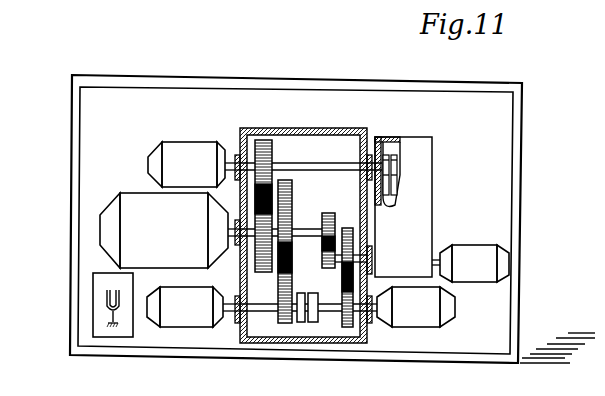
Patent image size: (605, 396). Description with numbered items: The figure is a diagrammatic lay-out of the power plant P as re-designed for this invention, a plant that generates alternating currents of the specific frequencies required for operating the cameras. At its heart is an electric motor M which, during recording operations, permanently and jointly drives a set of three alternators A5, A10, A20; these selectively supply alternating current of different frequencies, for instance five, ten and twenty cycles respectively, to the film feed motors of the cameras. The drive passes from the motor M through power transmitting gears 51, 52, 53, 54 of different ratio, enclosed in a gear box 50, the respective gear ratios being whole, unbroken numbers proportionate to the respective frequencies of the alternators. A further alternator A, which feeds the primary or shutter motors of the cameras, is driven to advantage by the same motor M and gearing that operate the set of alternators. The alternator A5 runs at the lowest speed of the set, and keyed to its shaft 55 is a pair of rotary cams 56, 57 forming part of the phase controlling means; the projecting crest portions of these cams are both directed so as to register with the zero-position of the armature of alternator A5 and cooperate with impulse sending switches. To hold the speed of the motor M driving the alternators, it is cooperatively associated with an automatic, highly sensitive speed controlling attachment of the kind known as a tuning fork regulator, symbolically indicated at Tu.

The gear box 50 is at (308, 128).
The power transmitting gear 51 is at (272, 152).
The power transmitting gear 52 is at (292, 204).
The power transmitting gear 53 is at (322, 257).
The power transmitting gear 54 is at (342, 282).
The shaft of alternator A5 55 is at (310, 167).
The rotary cam 56 is at (386, 150).
The rotary cam 57 is at (394, 150).
The power plant P is at (498, 165).
The tuning fork regulator Tu is at (105, 300).
The electric motor M is at (170, 230).
The alternator A5 is at (194, 164).
The alternator A10 is at (193, 307).
The alternator A20 is at (411, 307).
The alternator A is at (470, 263).